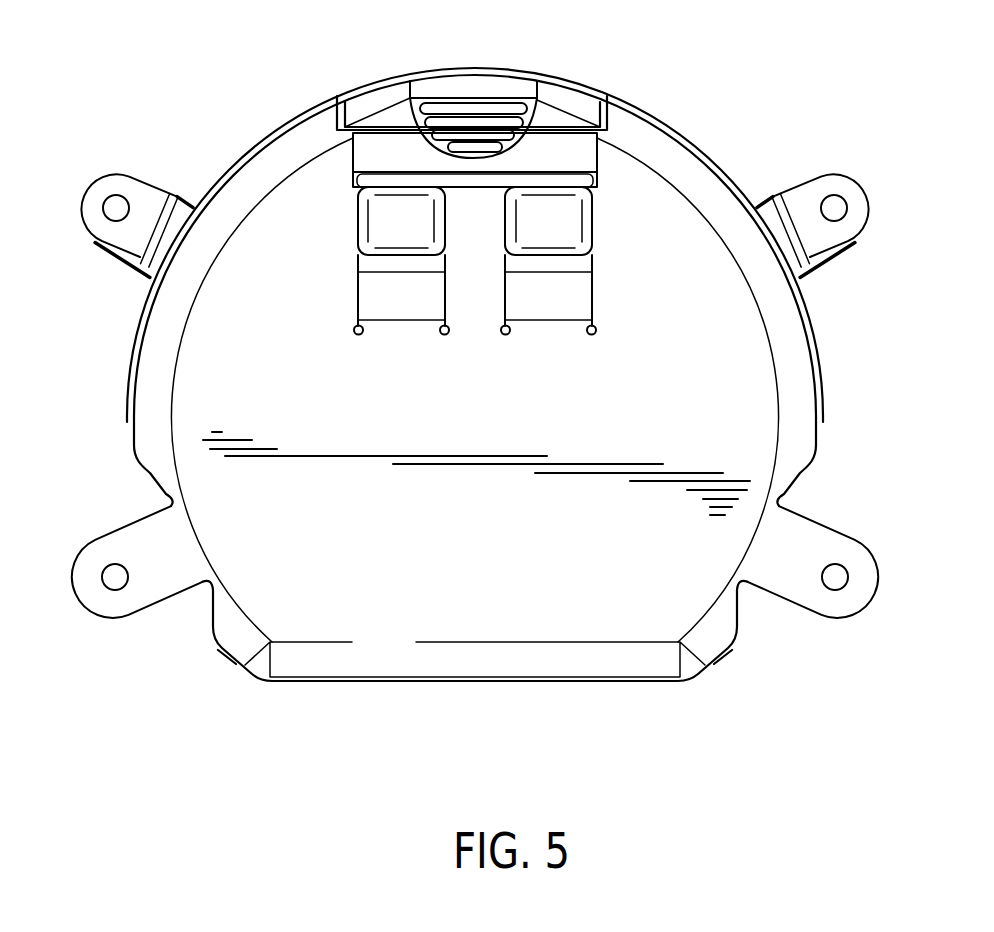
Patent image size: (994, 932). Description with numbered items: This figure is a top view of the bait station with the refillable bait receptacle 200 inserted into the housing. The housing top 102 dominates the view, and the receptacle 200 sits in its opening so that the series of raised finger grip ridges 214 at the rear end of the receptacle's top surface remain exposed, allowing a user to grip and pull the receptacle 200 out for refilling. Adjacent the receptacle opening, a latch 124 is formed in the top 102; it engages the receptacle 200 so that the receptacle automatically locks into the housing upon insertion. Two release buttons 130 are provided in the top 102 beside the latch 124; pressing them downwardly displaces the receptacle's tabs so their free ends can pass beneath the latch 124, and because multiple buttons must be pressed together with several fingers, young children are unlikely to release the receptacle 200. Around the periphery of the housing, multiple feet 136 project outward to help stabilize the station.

The top 102 is at (188, 367).
The latch 124 is at (585, 153).
The release buttons 130 is at (522, 213).
The feet 136 is at (88, 190).
The refillable bait receptacle 200 is at (572, 100).
The finger grip ridges 214 is at (473, 112).